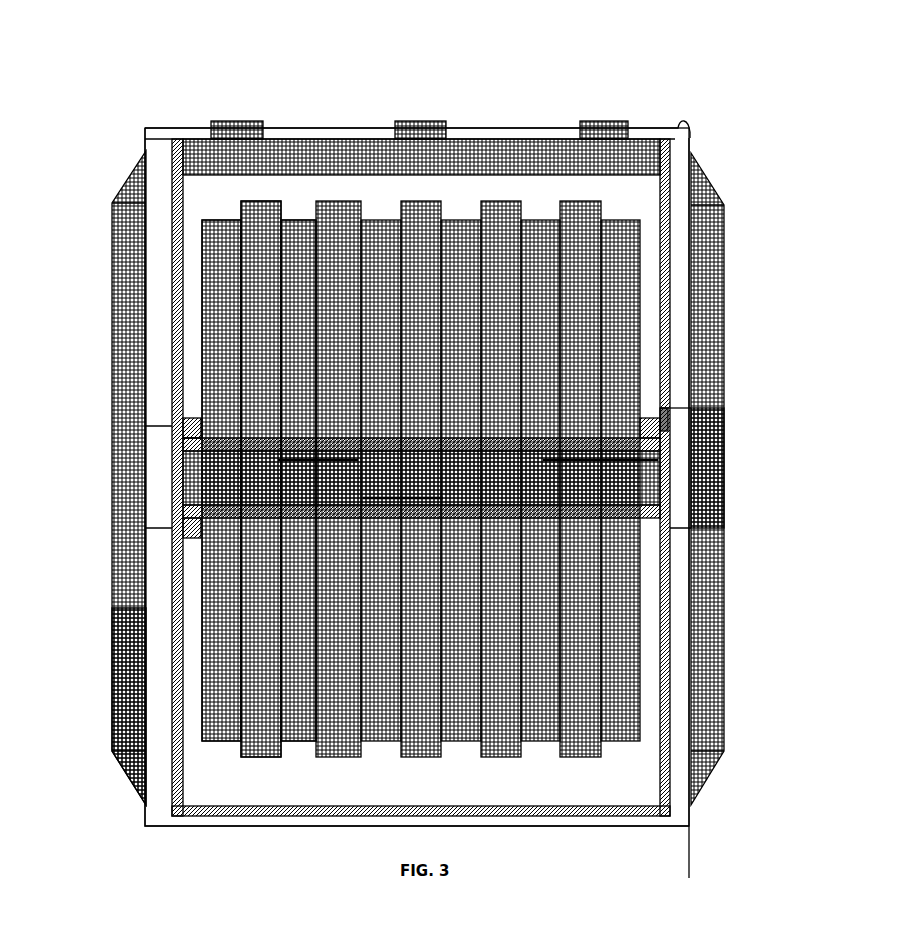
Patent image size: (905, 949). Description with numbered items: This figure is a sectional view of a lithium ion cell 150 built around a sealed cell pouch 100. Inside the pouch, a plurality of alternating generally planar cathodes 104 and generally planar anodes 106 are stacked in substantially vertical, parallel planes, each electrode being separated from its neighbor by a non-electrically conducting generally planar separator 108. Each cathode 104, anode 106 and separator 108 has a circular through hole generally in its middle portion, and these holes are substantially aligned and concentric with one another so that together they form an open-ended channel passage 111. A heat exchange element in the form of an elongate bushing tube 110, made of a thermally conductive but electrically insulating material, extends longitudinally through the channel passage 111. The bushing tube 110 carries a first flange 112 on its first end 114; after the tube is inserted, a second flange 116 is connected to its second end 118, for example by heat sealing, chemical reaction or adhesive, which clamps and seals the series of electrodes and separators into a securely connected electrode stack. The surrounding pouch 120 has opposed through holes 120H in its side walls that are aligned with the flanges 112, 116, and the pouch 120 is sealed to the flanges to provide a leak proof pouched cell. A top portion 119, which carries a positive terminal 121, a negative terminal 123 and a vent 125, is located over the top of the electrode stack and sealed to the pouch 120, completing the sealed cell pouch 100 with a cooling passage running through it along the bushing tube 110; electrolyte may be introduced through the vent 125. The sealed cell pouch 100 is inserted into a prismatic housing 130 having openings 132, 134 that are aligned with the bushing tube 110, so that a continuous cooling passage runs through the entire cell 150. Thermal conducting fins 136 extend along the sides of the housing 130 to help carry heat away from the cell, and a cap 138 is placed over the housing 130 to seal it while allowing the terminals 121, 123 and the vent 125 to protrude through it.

The lithium ion cell 150 is at (654, 56).
The cap 138 is at (162, 120).
The cell pouch 100 is at (532, 131).
The thermal conducting fins 136 is at (105, 563).
The prismatic housing 130 is at (140, 680).
The opening 134 is at (686, 450).
The pouch 120 is at (661, 203).
The second flange 116 is at (648, 402).
The top portion 119 is at (301, 131).
The positive terminal 121 is at (229, 113).
The vent 125 is at (413, 113).
The negative terminal 123 is at (596, 113).
The bushing tube 110 is at (612, 425).
The cathode 104 is at (215, 733).
The separator 108 is at (255, 750).
The anode 106 is at (290, 733).
The opening 132 is at (137, 481).
The first end 114 is at (176, 444).
The second end 118 is at (632, 502).
The first flange 112 is at (183, 411).
The channel passage 111 is at (192, 429).
The pouch through hole 120H is at (166, 497).